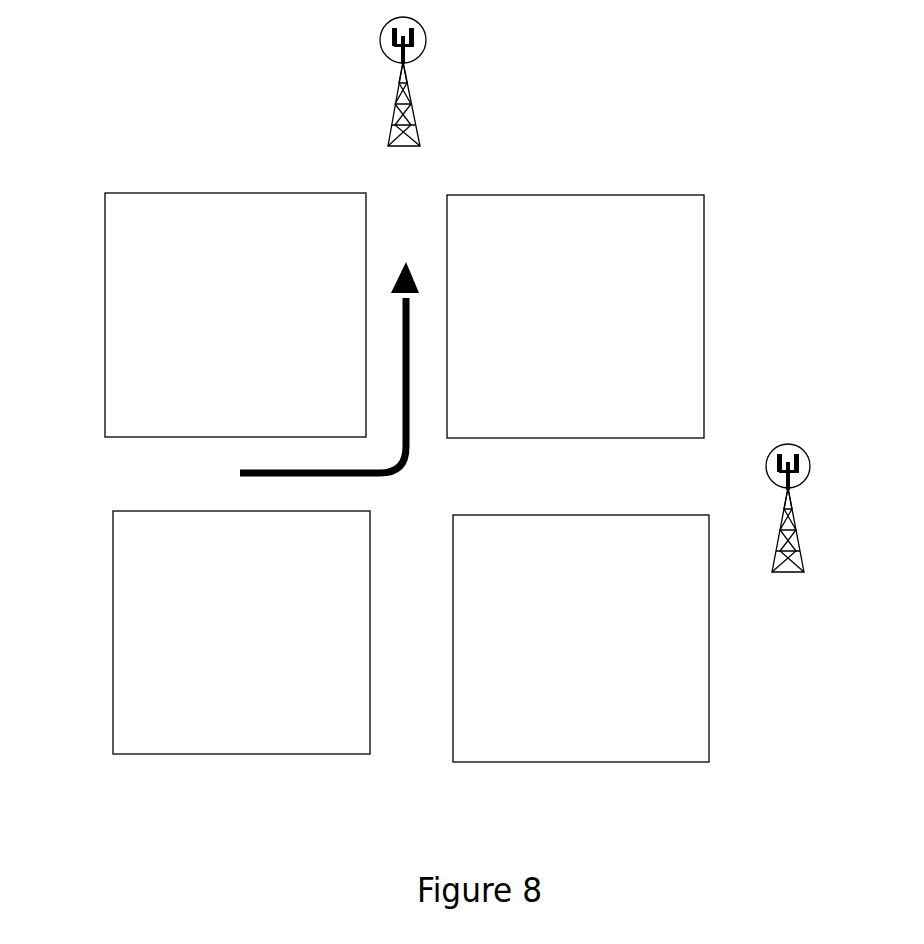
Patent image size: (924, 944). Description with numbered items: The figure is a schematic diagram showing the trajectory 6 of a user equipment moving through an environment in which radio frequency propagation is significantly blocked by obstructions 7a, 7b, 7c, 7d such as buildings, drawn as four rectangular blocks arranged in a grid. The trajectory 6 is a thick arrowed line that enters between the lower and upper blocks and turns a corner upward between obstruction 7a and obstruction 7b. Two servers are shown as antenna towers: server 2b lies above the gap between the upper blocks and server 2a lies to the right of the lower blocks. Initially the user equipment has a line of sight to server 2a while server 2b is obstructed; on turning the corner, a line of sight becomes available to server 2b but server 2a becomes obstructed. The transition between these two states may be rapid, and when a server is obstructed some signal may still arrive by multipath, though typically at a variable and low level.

The server 2a is at (807, 546).
The server 2b is at (422, 112).
The trajectory 6 is at (384, 478).
The obstruction 7a is at (158, 184).
The obstruction 7b is at (535, 190).
The obstruction 7c is at (174, 765).
The obstruction 7d is at (550, 771).